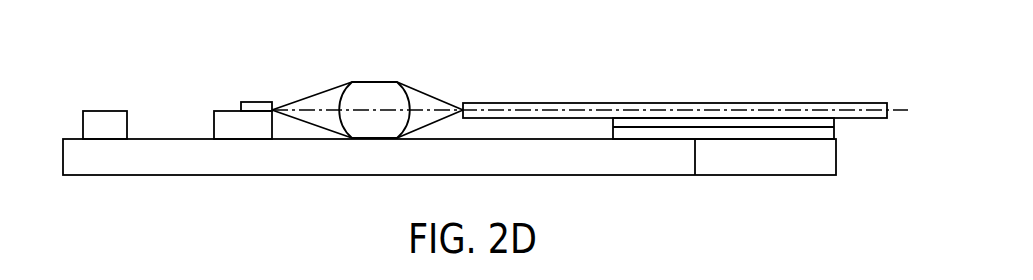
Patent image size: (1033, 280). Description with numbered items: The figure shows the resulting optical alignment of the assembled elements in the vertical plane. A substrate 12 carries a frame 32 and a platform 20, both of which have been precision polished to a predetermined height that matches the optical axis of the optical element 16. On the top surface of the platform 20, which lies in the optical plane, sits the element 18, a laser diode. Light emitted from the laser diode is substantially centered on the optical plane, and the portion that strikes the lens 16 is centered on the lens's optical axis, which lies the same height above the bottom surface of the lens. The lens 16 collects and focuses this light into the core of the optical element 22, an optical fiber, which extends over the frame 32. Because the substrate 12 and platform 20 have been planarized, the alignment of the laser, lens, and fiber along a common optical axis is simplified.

The substrate 12 is at (759, 165).
The optical element 16 is at (377, 92).
The element 18 is at (256, 107).
The platform 20 is at (230, 122).
The optical element 22 is at (563, 102).
The frame 32 is at (103, 122).